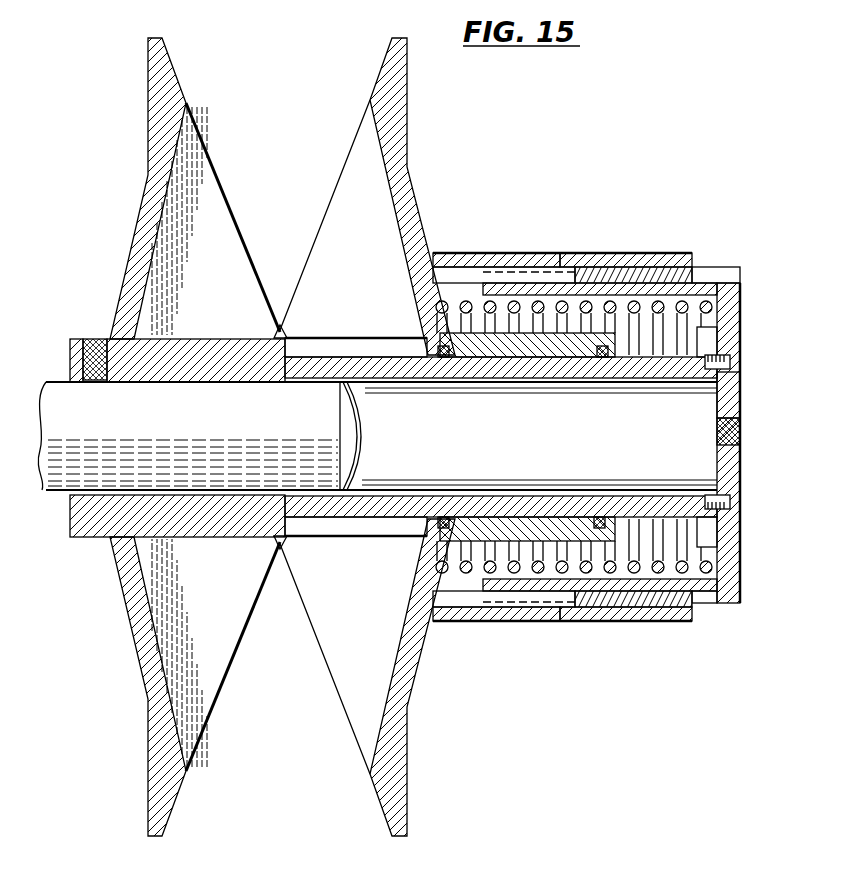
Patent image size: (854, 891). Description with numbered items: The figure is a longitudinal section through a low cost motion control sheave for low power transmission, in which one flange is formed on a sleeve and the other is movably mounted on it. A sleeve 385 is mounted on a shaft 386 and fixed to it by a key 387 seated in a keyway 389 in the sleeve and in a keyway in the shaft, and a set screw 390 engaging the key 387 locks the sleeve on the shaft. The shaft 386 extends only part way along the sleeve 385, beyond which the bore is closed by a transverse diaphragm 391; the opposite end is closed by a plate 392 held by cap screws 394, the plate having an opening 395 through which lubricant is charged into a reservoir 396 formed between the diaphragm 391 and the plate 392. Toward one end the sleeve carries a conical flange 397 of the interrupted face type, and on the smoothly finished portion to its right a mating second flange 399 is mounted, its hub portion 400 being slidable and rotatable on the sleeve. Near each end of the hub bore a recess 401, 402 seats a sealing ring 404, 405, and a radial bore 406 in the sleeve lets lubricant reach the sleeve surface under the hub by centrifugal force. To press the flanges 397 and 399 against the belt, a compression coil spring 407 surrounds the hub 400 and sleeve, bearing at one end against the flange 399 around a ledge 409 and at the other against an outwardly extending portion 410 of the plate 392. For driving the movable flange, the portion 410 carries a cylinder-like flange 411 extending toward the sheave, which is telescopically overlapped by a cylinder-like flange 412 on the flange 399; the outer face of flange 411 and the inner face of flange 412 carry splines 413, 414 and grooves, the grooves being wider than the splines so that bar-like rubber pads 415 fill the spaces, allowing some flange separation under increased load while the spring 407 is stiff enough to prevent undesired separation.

The sleeve 385 is at (97, 537).
The shaft 386 is at (48, 393).
The key 387 is at (173, 383).
The keyway 389 is at (195, 375).
The set screw 390 is at (88, 337).
The diaphragm 391 is at (370, 440).
The plate 392 is at (733, 407).
The cap screws 394 is at (735, 360).
The opening 395 is at (752, 424).
The reservoir 396 is at (437, 478).
The conical flange 397 is at (207, 151).
The second flange 399 is at (403, 145).
The hub portion 400 is at (470, 335).
The recess 401 is at (428, 348).
The recess 402 is at (606, 360).
The sealing ring 404 is at (440, 354).
The sealing ring 405 is at (525, 379).
The radial bore 406 is at (460, 364).
The compression coil spring 407 is at (522, 577).
The ledge 409 is at (437, 565).
The outwardly extending portion 410 is at (742, 292).
The cylinder-like flange 411 is at (513, 287).
The cylinder-like flange 412 is at (668, 262).
The splines 413 is at (712, 276).
The splines 414 is at (450, 268).
The pads 415 is at (642, 268).